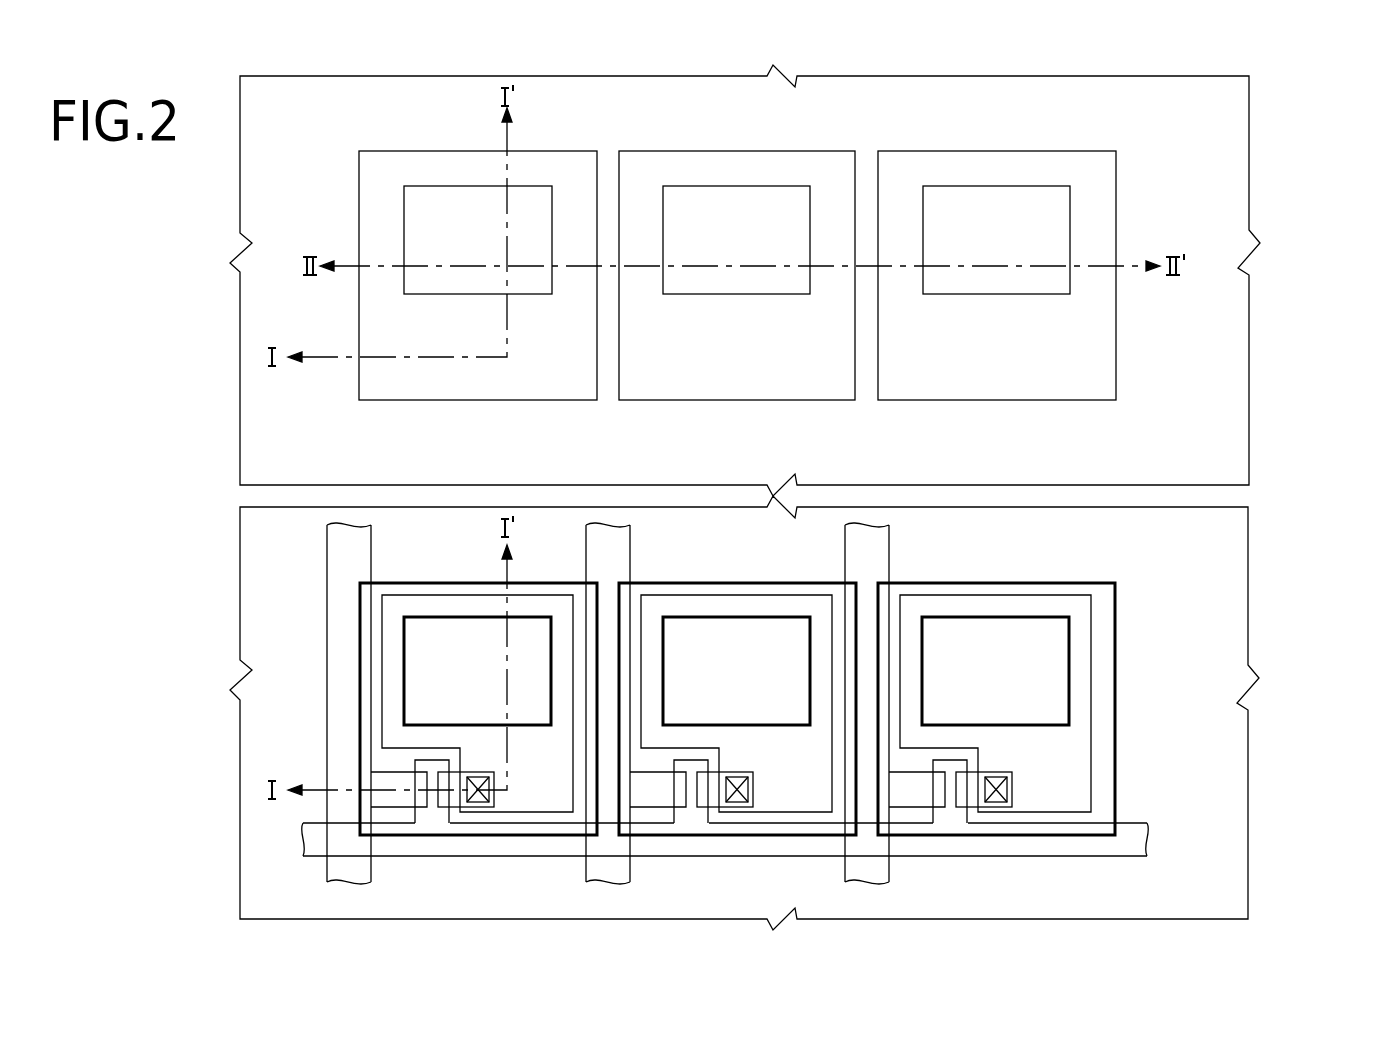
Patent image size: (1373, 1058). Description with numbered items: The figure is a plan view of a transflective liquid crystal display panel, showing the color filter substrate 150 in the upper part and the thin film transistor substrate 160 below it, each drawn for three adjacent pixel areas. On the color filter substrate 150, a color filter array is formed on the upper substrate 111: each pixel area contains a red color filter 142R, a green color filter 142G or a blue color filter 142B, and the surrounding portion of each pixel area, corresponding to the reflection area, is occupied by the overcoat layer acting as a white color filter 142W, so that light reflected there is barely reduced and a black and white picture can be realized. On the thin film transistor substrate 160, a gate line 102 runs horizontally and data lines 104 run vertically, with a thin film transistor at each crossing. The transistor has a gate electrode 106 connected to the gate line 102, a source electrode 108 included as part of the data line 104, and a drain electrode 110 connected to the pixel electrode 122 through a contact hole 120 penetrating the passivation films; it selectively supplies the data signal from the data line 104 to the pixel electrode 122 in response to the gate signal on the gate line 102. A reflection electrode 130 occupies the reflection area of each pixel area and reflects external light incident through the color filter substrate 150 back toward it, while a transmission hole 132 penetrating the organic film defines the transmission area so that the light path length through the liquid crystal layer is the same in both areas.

The gate line 102 is at (1147, 844).
The data line 104 is at (889, 868).
The gate electrode 106 is at (960, 760).
The source electrode 108 is at (915, 772).
The drain electrode 110 is at (1012, 776).
The upper substrate 111 is at (1249, 342).
The contact hole 120 is at (1012, 795).
The pixel electrode 122 is at (1090, 740).
The reflection electrode 130 is at (1115, 672).
The transmission hole 132 is at (1069, 627).
The red color filter 142R is at (435, 186).
The green color filter 142G is at (712, 186).
The blue color filter 142B is at (955, 186).
The white color filter 142W is at (481, 400).
The color filter substrate 150 is at (793, 280).
The thin film transistor substrate 160 is at (1265, 567).